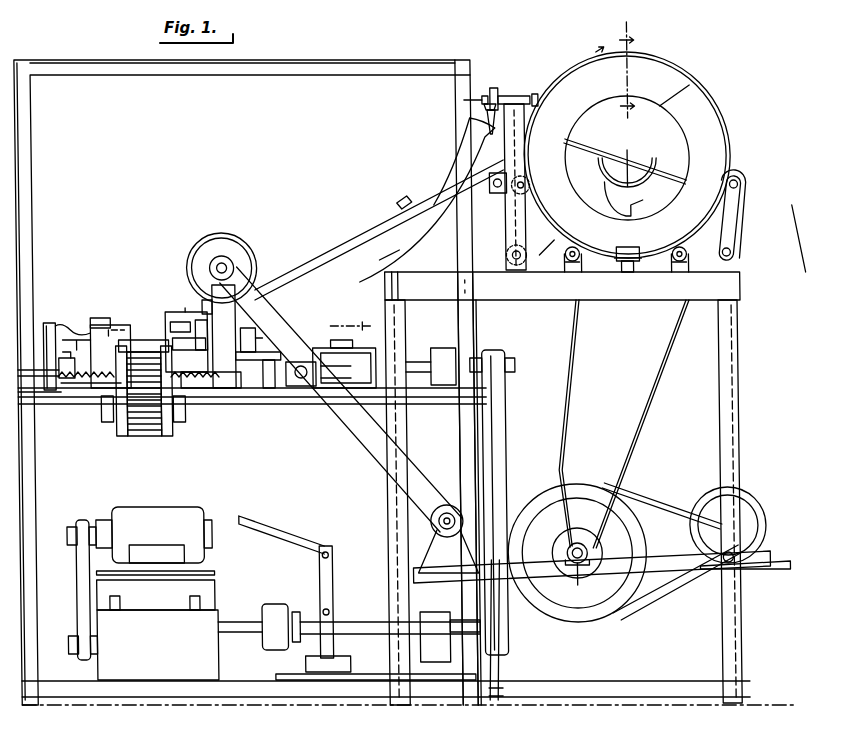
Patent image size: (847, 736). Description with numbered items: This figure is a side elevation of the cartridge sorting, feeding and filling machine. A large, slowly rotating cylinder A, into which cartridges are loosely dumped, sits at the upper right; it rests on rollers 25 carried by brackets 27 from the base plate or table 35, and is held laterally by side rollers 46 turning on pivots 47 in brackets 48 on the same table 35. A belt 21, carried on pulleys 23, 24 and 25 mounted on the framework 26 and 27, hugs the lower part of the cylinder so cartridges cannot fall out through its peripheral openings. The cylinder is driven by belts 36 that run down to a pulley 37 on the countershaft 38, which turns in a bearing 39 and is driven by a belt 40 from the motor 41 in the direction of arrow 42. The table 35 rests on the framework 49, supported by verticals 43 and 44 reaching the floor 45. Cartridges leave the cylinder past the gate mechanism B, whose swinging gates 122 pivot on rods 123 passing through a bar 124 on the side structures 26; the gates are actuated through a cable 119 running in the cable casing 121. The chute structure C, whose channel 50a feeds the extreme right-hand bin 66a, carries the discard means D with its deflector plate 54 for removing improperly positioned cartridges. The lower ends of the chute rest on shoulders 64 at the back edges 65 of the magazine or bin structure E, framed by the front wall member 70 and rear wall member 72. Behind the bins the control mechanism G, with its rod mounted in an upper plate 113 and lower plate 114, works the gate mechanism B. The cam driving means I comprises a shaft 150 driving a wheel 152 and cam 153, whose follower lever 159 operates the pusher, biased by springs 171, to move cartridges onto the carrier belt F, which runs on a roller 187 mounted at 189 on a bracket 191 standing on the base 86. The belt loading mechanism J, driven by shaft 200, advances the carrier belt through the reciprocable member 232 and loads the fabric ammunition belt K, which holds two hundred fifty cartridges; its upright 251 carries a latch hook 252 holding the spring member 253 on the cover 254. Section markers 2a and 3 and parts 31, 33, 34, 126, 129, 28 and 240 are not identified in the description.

The section line 2a is at (618, 70).
The drum inner wall 34 is at (598, 106).
The drum end wall 33 is at (671, 105).
The cross bar 31 is at (588, 147).
The rotating cylinder A is at (712, 112).
The stop screw 126 is at (495, 90).
The gate mechanism B is at (527, 90).
The swinging gates 122 is at (536, 95).
The nut 129 is at (485, 97).
The bar 124 is at (516, 97).
The rods 123 is at (483, 101).
The cable 119 is at (488, 118).
The pulley 23 is at (740, 175).
The framework 26 is at (742, 210).
The pulley 24 is at (742, 245).
The rollers 25 is at (575, 245).
The pivots 47 is at (628, 248).
The belt 21 is at (547, 242).
The brackets 27 is at (570, 266).
The side rollers 46 is at (620, 260).
The brackets 48 is at (628, 267).
The base plate 35 is at (652, 268).
The framework 49 is at (510, 292).
The deflector plate 54 is at (410, 200).
The discharge means D is at (417, 199).
The chute structure C is at (370, 238).
The channel member 50a is at (388, 235).
The pivot bearing 28 is at (510, 193).
The cable casing 121 is at (316, 276).
The section line 3 is at (240, 329).
The latch hook 252 is at (46, 324).
The spring member 253 is at (75, 326).
The cover 254 is at (108, 318).
The magazine or bin structure E is at (158, 316).
The bin 66a is at (176, 300).
The shoulders 64 is at (208, 318).
The back edges 65 is at (202, 326).
The front wall member 70 is at (180, 318).
The rear wall member 72 is at (200, 340).
The reciprocable member 232 is at (143, 342).
The belt loading mechanism J is at (76, 340).
The ammunition belt K is at (110, 356).
The stop 240 is at (52, 359).
The upright 251 is at (58, 397).
The springs 171 is at (90, 395).
The supporting bracket 191 is at (103, 414).
The roller mounting 189 is at (117, 420).
The carrier belt F is at (140, 440).
The roller 187 is at (168, 420).
The base 86 is at (205, 388).
The follower lever 159 is at (266, 390).
The shaft 150 is at (299, 380).
The wheel 152 is at (322, 400).
The upper plate 113 is at (248, 328).
The control mechanism G is at (264, 325).
The lower plate 114 is at (276, 352).
The cam 153 is at (340, 351).
The cam driving means I is at (345, 368).
The shaft 200 is at (414, 368).
The vertical 44 is at (405, 428).
The belts 36 is at (573, 388).
The vertical 43 is at (738, 394).
The pulley 37 is at (578, 540).
The bearing 39 is at (565, 546).
The countershaft 38 is at (588, 585).
The belt 40 is at (656, 500).
The arrow 42 is at (634, 523).
The motor 41 is at (745, 505).
The floor 45 is at (545, 700).